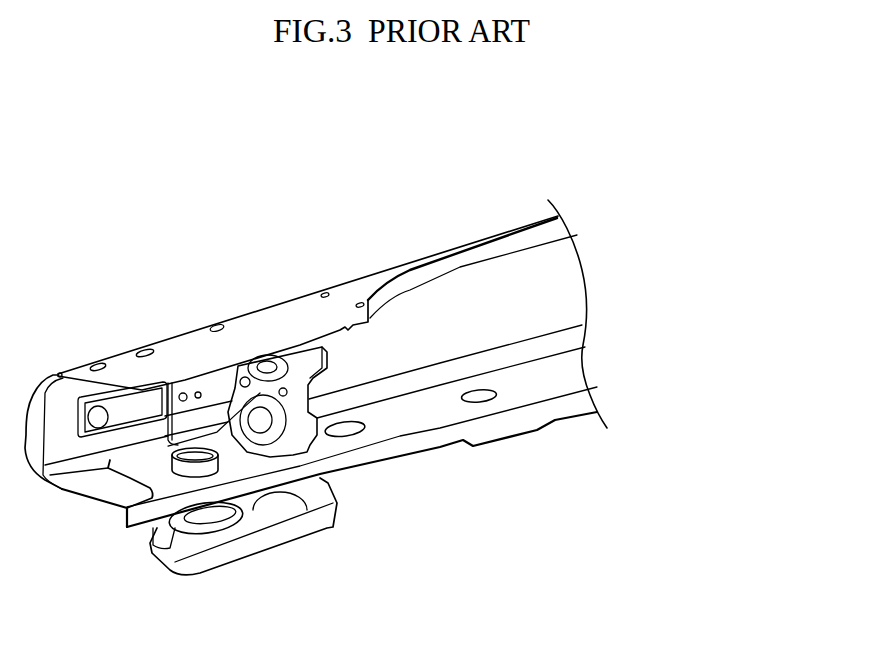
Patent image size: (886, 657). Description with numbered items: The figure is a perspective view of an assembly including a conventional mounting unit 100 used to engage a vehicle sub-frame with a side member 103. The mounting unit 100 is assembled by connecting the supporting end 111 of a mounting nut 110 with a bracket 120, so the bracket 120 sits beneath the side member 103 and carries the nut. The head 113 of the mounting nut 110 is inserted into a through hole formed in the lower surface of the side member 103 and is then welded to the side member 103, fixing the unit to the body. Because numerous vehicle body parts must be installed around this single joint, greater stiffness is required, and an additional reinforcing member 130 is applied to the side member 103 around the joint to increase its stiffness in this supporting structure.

The mounting unit 100 is at (345, 528).
The side member 103 is at (273, 326).
The mounting nut 110 is at (240, 464).
The supporting end 111 is at (207, 520).
The head 113 is at (182, 472).
The bracket 120 is at (275, 540).
The reinforcing member 130 is at (75, 453).